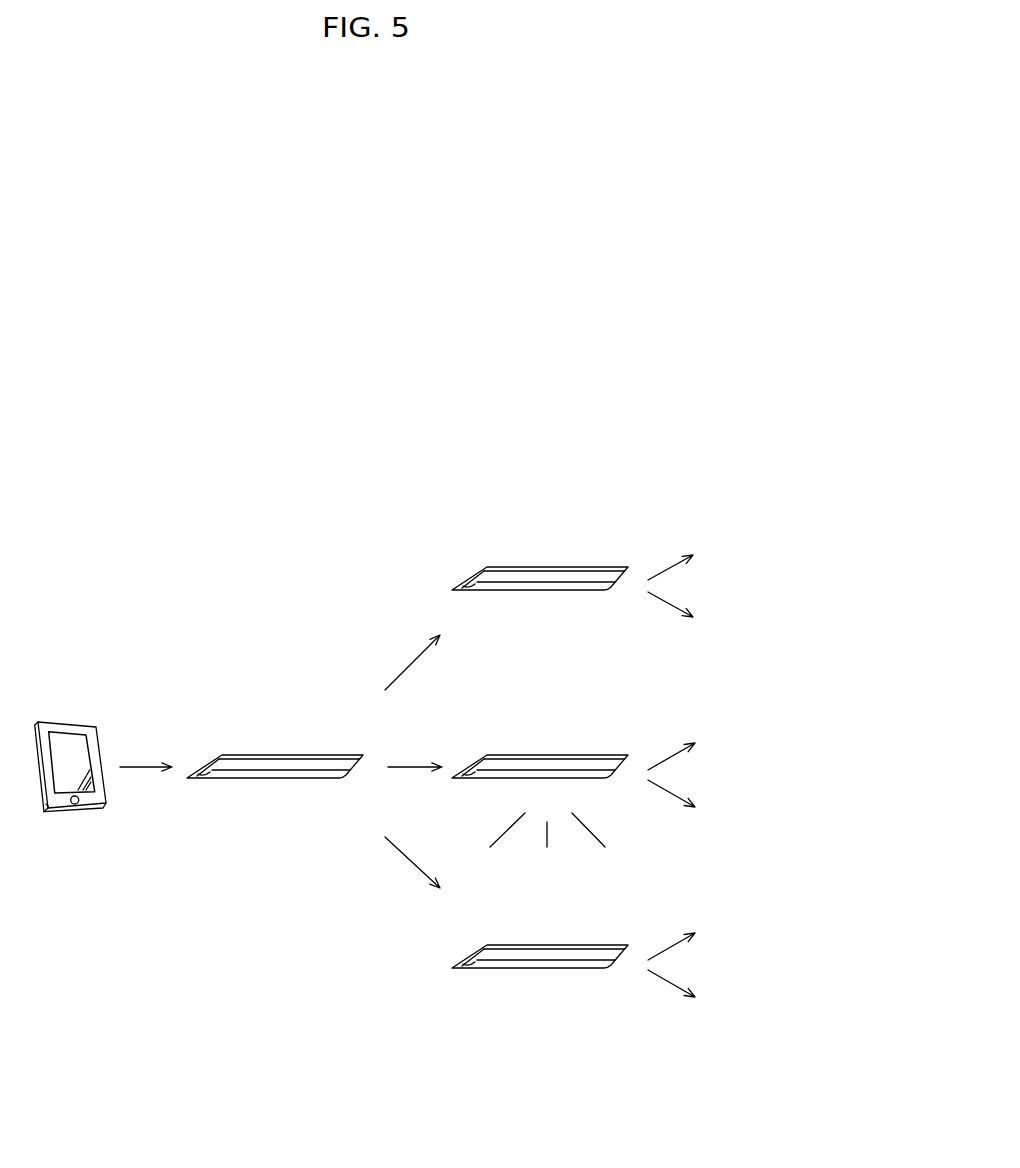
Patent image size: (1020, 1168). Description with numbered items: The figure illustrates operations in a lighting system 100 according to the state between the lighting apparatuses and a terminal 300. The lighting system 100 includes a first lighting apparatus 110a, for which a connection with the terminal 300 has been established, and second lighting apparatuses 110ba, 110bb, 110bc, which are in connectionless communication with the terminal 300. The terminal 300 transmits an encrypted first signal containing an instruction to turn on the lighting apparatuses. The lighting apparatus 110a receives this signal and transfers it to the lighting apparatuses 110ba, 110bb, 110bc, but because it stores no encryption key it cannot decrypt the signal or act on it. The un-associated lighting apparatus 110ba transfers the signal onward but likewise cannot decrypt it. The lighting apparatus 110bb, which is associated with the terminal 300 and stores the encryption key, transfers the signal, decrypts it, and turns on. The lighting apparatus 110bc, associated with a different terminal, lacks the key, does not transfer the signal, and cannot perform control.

The lighting system 100 is at (693, 393).
The terminal 300 is at (70, 720).
The first lighting apparatus 110a is at (270, 753).
The second lighting apparatus 110ba is at (540, 565).
The second lighting apparatus 110bb is at (538, 753).
The second lighting apparatus 110bc is at (538, 943).